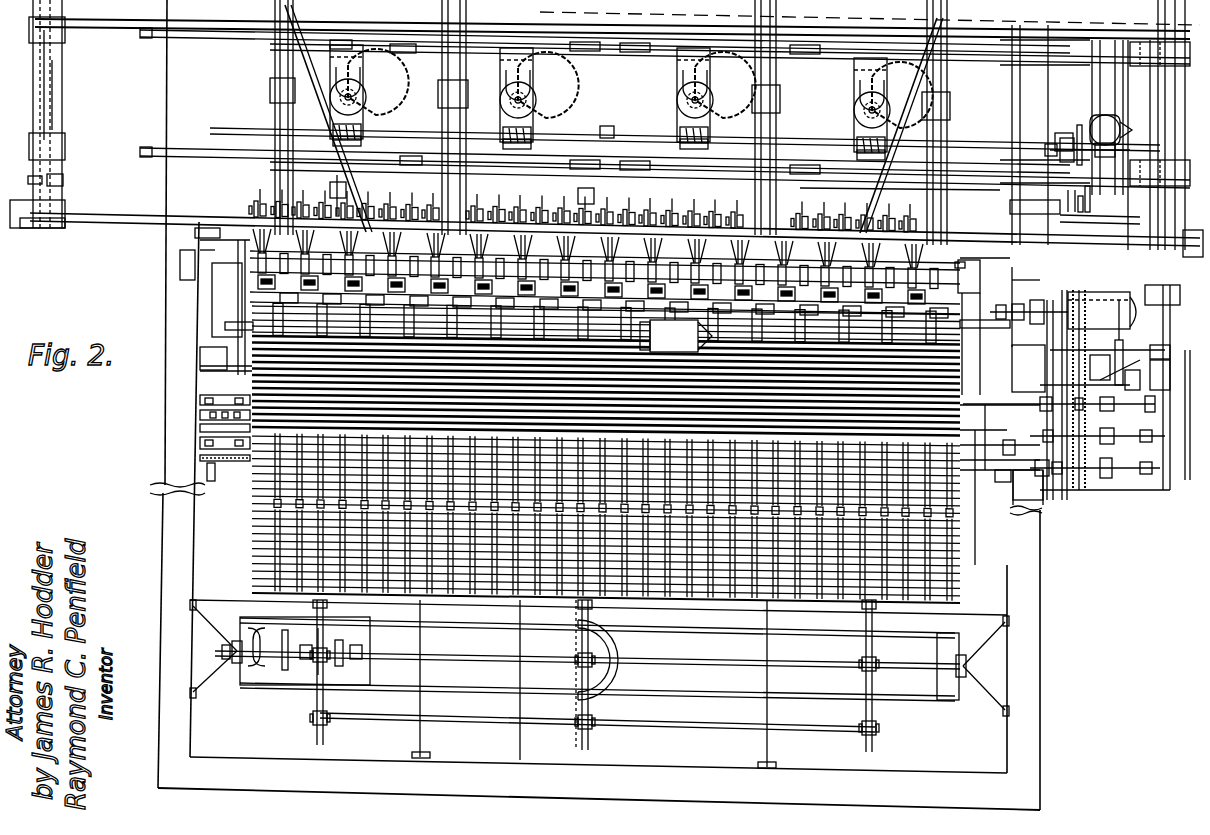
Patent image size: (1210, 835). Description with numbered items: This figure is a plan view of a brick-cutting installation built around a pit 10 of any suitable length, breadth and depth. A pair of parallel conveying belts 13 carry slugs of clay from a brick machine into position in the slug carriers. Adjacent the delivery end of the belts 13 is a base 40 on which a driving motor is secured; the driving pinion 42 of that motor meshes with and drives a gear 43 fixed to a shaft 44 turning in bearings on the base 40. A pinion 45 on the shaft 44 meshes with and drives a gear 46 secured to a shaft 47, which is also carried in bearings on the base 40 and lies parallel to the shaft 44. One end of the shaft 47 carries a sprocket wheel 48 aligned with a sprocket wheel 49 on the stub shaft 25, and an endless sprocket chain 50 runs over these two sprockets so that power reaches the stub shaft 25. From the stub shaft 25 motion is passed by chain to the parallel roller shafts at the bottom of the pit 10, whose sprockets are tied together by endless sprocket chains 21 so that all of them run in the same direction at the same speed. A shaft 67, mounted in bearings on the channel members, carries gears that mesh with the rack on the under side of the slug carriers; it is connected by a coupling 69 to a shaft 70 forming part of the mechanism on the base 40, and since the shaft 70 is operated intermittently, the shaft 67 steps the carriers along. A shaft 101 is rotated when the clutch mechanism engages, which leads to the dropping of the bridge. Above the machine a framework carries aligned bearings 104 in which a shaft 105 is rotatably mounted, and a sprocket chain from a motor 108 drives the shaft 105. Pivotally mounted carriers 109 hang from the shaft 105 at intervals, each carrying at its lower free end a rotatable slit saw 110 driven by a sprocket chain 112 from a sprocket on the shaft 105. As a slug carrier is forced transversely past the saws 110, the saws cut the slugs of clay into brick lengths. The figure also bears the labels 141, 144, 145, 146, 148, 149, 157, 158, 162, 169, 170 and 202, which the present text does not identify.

The pit 10 is at (1005, 110).
The conveying belts 13 is at (200, 416).
The endless sprocket chain 21 is at (556, 643).
The stub shaft 25 is at (1027, 310).
The base 40 is at (1150, 345).
The driving pinion 42 is at (1086, 305).
The gear 43 is at (1102, 361).
The shaft 44 is at (1122, 342).
The pinion 45 is at (1167, 352).
The gear 46 is at (1170, 415).
The shaft 47 is at (1120, 375).
The sprocket wheel 48 is at (1050, 372).
The sprocket wheel 49 is at (1060, 326).
The endless sprocket chain 50 is at (1070, 338).
The shaft 67 is at (992, 470).
The coupling 69 is at (1048, 472).
The shaft 70 is at (1095, 472).
The shaft 101 is at (608, 271).
The alined bearings 104 is at (982, 263).
The shaft 105 is at (255, 282).
The motor 108 is at (606, 461).
The pivotally mounted carrier 109 is at (280, 294).
The slit saw 110 is at (360, 190).
The sprocket chain 112 is at (268, 228).
The standard 141 is at (58, 99).
The guide 144 is at (52, 75).
The bracket 145 is at (66, 180).
The bearing 146 is at (105, 53).
The shaft 148 is at (165, 40).
The rail 149 is at (395, 45).
The cutter head 157 is at (358, 92).
The cutter 158 is at (362, 112).
The shaft 162 is at (545, 128).
The lever 169 is at (340, 183).
The column 170 is at (273, 112).
The motor 202 is at (1102, 120).